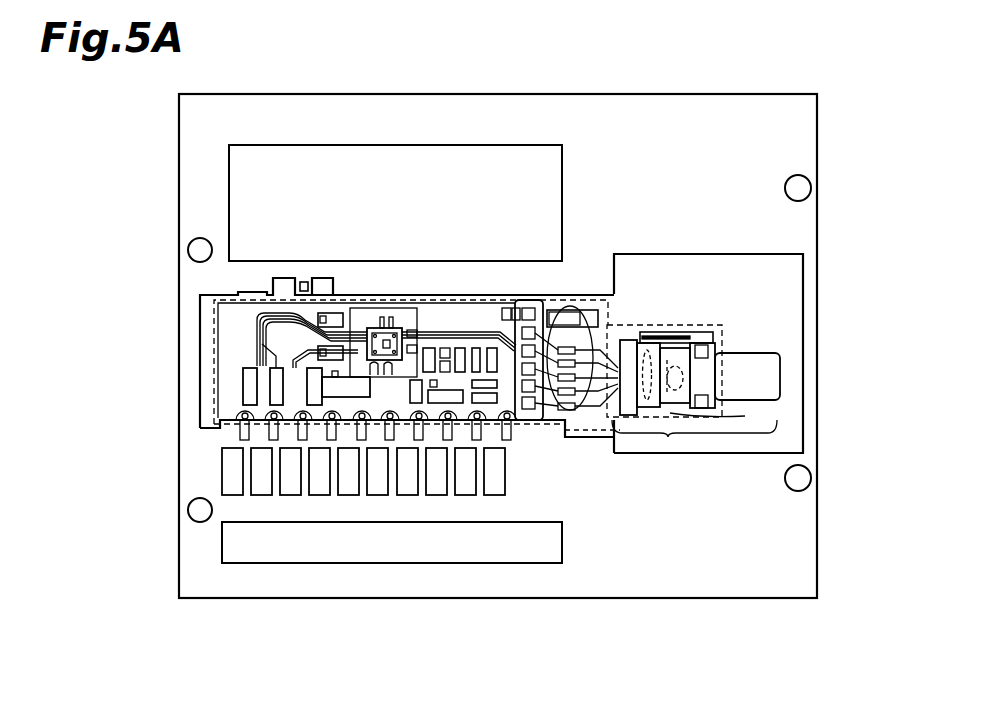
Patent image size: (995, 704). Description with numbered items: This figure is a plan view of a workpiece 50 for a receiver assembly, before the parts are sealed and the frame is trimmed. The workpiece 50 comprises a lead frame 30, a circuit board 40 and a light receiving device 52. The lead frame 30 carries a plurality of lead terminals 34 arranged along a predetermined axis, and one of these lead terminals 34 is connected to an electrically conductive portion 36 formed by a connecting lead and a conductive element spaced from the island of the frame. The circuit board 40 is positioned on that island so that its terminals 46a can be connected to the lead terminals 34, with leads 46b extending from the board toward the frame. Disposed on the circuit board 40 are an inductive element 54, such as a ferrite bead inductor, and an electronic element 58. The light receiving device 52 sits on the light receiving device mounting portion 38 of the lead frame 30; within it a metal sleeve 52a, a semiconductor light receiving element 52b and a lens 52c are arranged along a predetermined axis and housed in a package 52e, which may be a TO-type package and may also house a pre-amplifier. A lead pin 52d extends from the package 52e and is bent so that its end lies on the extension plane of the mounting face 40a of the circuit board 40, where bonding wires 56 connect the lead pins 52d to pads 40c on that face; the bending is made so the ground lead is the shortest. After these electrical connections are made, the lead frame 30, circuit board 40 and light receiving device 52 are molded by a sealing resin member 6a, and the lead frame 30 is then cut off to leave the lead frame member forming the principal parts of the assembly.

The lead frame 30 is at (478, 600).
The lead terminals 34 is at (245, 462).
The electrically conductive portion 36 is at (316, 296).
The light receiving device mounting portion 38 is at (628, 347).
The circuit board 40 is at (238, 297).
The mounting face 40a is at (432, 318).
The pads 40c is at (512, 308).
The terminals 46a is at (243, 423).
The leads 46b is at (362, 420).
The workpiece 50 is at (674, 608).
The light receiving device 52 is at (668, 437).
The sleeve 52a is at (750, 360).
The semiconductor light receiving element 52b is at (683, 342).
The lens 52c is at (712, 345).
The lead pin 52d is at (606, 326).
The package 52e is at (735, 417).
The inductive element 54 is at (317, 387).
The bonding wires 56 is at (556, 328).
The electronic element 58 is at (389, 330).
The sealing resin member 6a is at (200, 387).